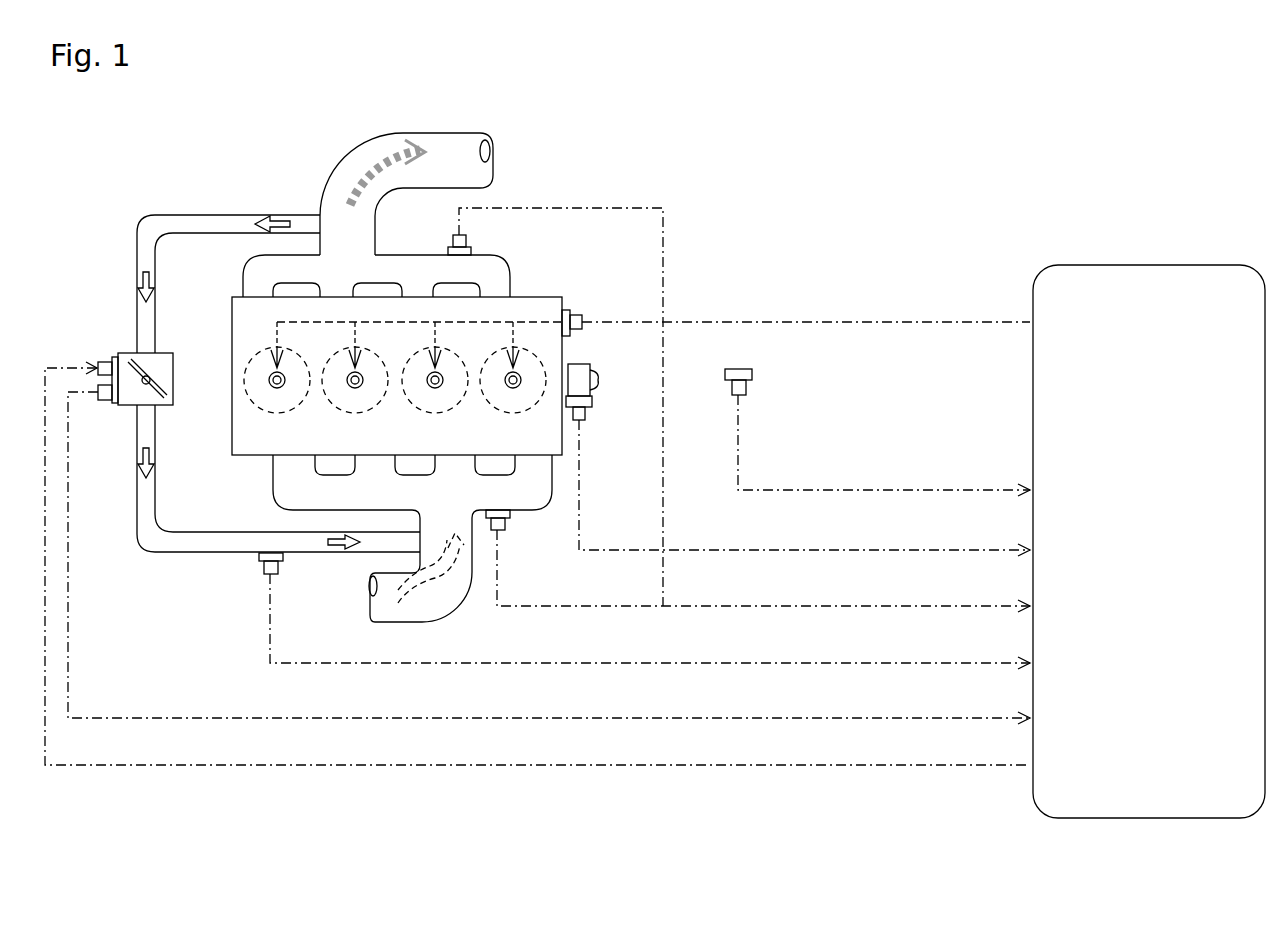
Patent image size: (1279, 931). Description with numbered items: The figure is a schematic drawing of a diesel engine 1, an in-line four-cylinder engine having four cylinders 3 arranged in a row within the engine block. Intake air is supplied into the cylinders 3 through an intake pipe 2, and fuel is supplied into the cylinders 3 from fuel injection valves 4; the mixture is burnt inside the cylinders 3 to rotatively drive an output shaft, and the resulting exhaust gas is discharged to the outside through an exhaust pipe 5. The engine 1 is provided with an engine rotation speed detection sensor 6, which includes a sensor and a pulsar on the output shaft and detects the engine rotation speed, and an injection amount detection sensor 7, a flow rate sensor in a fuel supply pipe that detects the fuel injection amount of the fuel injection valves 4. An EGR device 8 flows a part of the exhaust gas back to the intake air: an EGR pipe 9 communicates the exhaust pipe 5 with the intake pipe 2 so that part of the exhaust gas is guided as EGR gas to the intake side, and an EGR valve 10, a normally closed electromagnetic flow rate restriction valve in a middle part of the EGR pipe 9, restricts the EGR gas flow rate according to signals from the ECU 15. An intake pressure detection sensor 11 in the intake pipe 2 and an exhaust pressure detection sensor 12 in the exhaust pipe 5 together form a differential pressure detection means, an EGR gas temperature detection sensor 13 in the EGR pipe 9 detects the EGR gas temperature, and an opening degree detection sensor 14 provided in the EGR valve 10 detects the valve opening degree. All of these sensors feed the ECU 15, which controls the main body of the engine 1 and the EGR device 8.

The engine 1 is at (80, 118).
The intake pipe 2 is at (375, 610).
The cylinder 3 is at (303, 396).
The fuel injection valve 4 is at (277, 390).
The exhaust pipe 5 is at (457, 145).
The engine rotation speed detection sensor 6 is at (585, 415).
The injection amount detection sensor 7 is at (752, 387).
The EGR device 8 is at (100, 298).
The EGR pipe 9 is at (193, 222).
The EGR valve 10 is at (173, 363).
The intake pressure detection sensor 11 is at (508, 528).
The exhaust pressure detection sensor 12 is at (472, 243).
The EGR gas temperature detection sensor 13 is at (262, 566).
The opening degree detection sensor 14 is at (106, 406).
The ECU 15 is at (1148, 273).